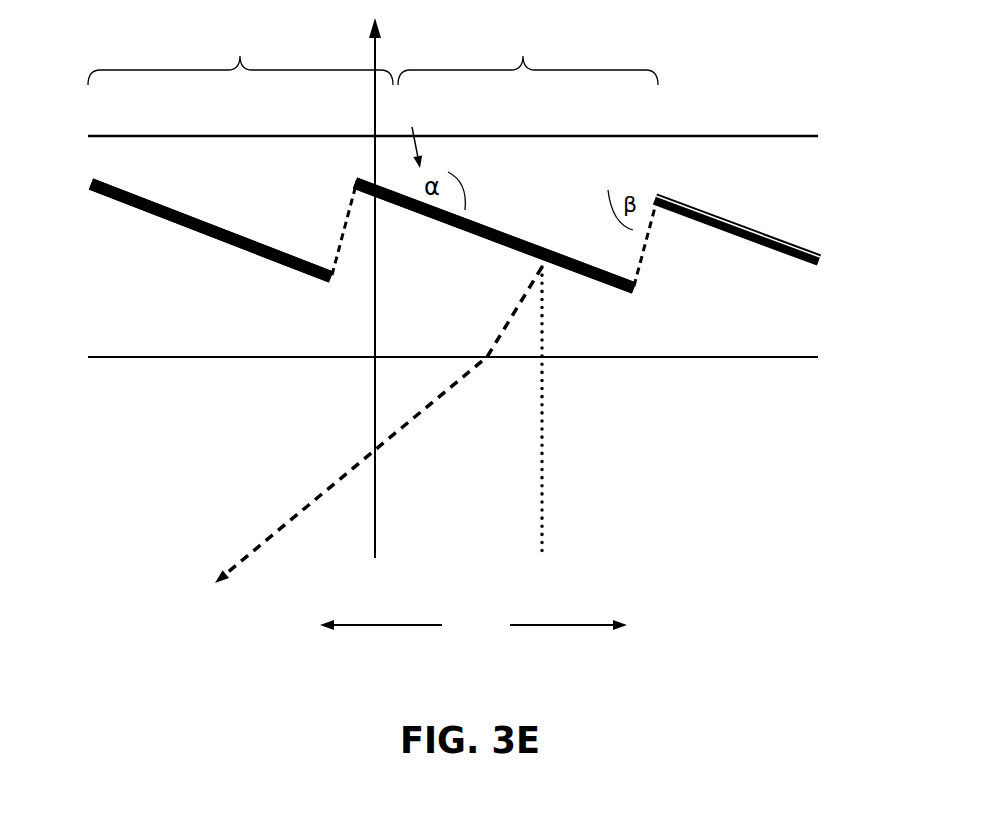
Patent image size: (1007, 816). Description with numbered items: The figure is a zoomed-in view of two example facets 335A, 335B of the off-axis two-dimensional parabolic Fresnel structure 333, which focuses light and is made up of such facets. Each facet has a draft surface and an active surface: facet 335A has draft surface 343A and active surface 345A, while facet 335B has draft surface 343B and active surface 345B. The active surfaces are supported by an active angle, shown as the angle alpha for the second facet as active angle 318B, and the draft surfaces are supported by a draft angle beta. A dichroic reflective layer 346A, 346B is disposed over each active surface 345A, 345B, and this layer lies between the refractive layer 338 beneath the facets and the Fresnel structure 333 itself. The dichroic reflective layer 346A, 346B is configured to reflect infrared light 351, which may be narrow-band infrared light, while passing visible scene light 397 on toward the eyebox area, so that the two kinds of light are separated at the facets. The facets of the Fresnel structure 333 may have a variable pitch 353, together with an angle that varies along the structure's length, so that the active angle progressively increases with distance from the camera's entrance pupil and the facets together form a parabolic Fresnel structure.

The off-axis two-dimensional parabolic Fresnel structure 333 is at (885, 220).
The refractive layer 338 is at (453, 337).
The active surface of facet 335A 345A is at (245, 218).
The active surface of facet 335B 345B is at (525, 226).
The dichroic reflective layer on facet 335A 346A is at (138, 229).
The dichroic reflective layer on facet 335B 346B is at (454, 246).
The draft surface of facet 335A 343A is at (322, 244).
The draft surface of facet 335B 343B is at (624, 254).
The active angle of facet 335B 318B is at (415, 137).
The visible scene light 397 is at (373, 303).
The infrared light 351 is at (541, 427).
The pitch 353 is at (473, 623).
The facet 335A is at (240, 58).
The facet 335B is at (528, 58).